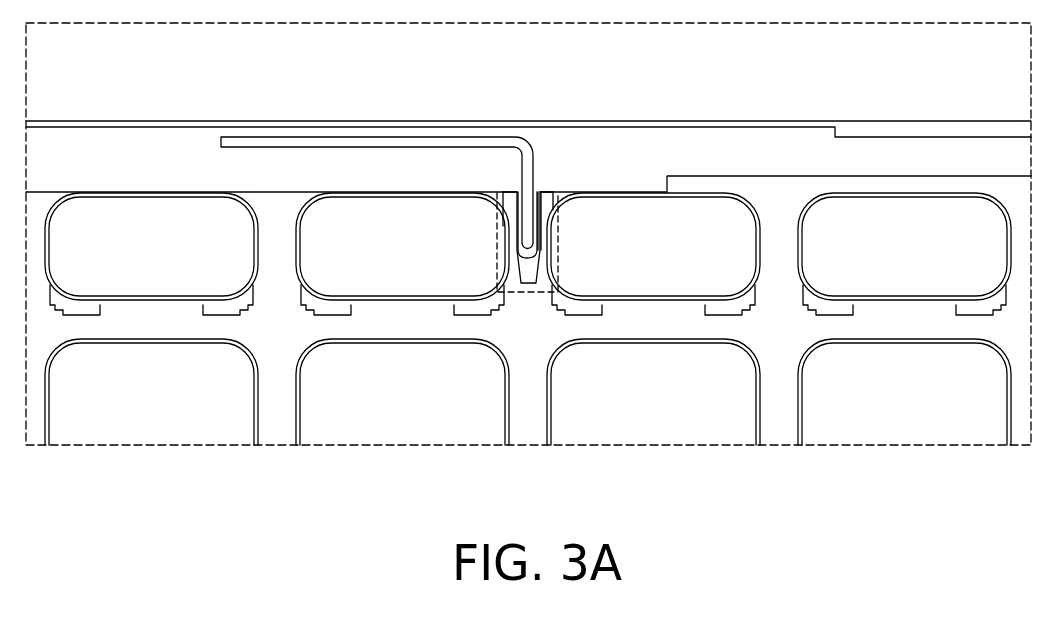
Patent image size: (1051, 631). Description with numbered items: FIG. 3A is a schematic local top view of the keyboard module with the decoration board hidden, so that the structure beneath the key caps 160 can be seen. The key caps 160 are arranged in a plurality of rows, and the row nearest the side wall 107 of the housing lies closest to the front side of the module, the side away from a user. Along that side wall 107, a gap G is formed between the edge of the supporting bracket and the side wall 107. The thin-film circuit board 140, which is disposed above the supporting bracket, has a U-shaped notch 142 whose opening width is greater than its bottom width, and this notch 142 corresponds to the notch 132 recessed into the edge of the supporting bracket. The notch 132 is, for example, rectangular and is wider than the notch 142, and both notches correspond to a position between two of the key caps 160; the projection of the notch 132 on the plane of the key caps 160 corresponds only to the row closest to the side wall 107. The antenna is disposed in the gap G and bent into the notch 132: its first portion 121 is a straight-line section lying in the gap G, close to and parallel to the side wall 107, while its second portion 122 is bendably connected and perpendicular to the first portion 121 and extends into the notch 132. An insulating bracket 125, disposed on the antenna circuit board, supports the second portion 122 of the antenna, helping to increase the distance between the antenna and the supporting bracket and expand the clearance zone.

The gap G is at (141, 168).
The thin-film circuit board 140 is at (252, 192).
The side wall 107 is at (283, 123).
The key caps 160 is at (402, 242).
The first portion 121 is at (440, 142).
The notch 142 is at (503, 197).
The second portion 122 is at (543, 203).
The insulating bracket 125 is at (553, 197).
The notch 132 is at (560, 245).